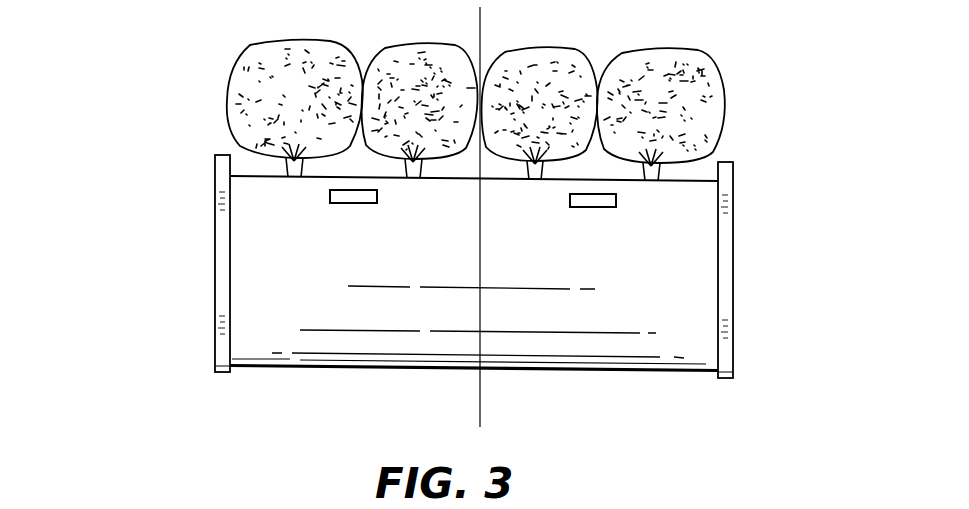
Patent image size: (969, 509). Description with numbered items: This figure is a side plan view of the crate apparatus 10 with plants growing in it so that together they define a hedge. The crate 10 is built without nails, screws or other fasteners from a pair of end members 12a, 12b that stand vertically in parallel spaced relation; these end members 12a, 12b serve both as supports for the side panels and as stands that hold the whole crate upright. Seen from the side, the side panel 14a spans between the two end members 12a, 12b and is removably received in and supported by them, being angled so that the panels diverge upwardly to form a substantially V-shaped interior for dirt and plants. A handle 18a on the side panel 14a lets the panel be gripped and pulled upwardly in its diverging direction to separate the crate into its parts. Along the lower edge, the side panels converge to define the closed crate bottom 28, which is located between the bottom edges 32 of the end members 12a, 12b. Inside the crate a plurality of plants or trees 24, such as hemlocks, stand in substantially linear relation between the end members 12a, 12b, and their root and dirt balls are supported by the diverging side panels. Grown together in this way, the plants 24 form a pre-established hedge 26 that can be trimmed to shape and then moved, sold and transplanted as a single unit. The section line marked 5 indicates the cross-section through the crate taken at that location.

The crate apparatus 10 is at (150, 85).
The plant or tree 24 is at (257, 62).
The hedge 26 is at (760, 78).
The end member 12a is at (215, 240).
The end member 12b is at (733, 290).
The handle 18a is at (585, 204).
The side panel 14a is at (366, 340).
The crate bottom 28 is at (566, 372).
The bottom edges 32 is at (220, 373).
The section line 5- 5 is at (496, 21).